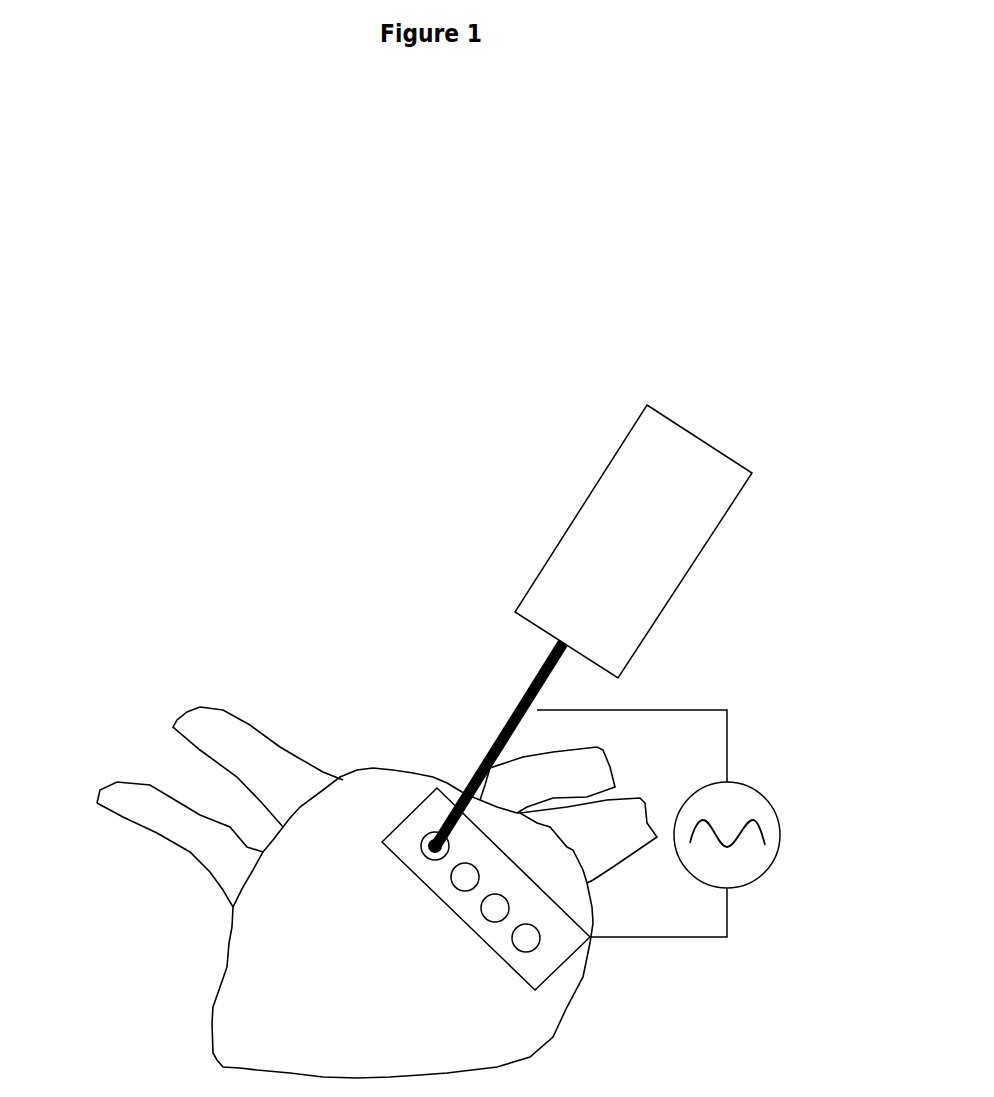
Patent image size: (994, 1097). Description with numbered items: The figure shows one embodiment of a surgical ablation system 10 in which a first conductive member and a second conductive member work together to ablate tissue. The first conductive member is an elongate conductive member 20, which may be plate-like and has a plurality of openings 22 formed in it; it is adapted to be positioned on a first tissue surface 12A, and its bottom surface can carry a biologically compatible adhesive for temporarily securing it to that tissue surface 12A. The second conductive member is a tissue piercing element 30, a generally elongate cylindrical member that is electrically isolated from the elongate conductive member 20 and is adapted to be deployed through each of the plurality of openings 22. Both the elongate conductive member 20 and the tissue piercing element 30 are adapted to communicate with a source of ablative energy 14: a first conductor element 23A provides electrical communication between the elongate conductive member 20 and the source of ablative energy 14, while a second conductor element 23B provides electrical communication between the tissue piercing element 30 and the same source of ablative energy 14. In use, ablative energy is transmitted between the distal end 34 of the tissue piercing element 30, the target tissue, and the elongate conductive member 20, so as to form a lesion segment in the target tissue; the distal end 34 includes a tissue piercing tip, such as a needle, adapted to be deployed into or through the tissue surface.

The system 10 is at (153, 218).
The first tissue surface 12A is at (367, 823).
The source of ablative energy 14 is at (804, 827).
The elongate conductive member 20 is at (408, 805).
The openings 22 is at (520, 935).
The first conductor element 23A is at (727, 918).
The second conductor element 23B is at (727, 757).
The tissue piercing element 30 is at (560, 485).
The distal end 34 is at (432, 846).